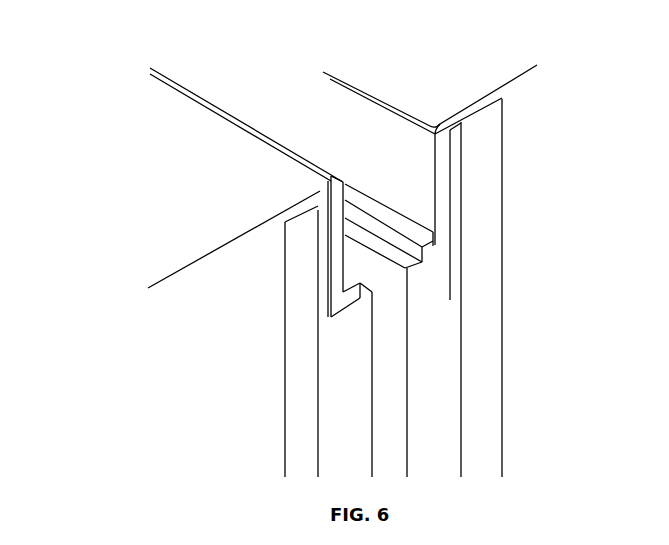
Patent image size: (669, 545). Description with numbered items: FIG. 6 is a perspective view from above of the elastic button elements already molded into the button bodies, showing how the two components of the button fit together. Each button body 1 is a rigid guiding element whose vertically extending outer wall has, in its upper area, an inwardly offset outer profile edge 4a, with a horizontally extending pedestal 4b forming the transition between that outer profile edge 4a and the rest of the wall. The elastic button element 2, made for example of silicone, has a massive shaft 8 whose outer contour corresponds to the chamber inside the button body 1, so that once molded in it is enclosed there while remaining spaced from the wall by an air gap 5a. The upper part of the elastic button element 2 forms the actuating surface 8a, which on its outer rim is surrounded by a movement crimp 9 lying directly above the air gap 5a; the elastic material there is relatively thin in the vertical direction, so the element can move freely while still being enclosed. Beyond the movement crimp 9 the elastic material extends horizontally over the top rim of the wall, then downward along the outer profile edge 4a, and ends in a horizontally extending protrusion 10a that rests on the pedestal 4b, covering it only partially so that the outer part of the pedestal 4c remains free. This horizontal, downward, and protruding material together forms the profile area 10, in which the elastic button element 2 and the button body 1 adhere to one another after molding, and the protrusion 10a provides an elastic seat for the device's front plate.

The button body 1 is at (178, 195).
The elastic button element 2 is at (430, 155).
The actuating surface 8a is at (378, 67).
The shaft 8 is at (372, 288).
The air gap 5a is at (281, 283).
The movement crimp 9 is at (296, 198).
The outer profile edge 4a is at (323, 217).
The profile area 10 is at (455, 182).
The protrusion 10a is at (447, 243).
The pedestal 4b is at (457, 262).
The outer part of the pedestal 4c is at (421, 273).